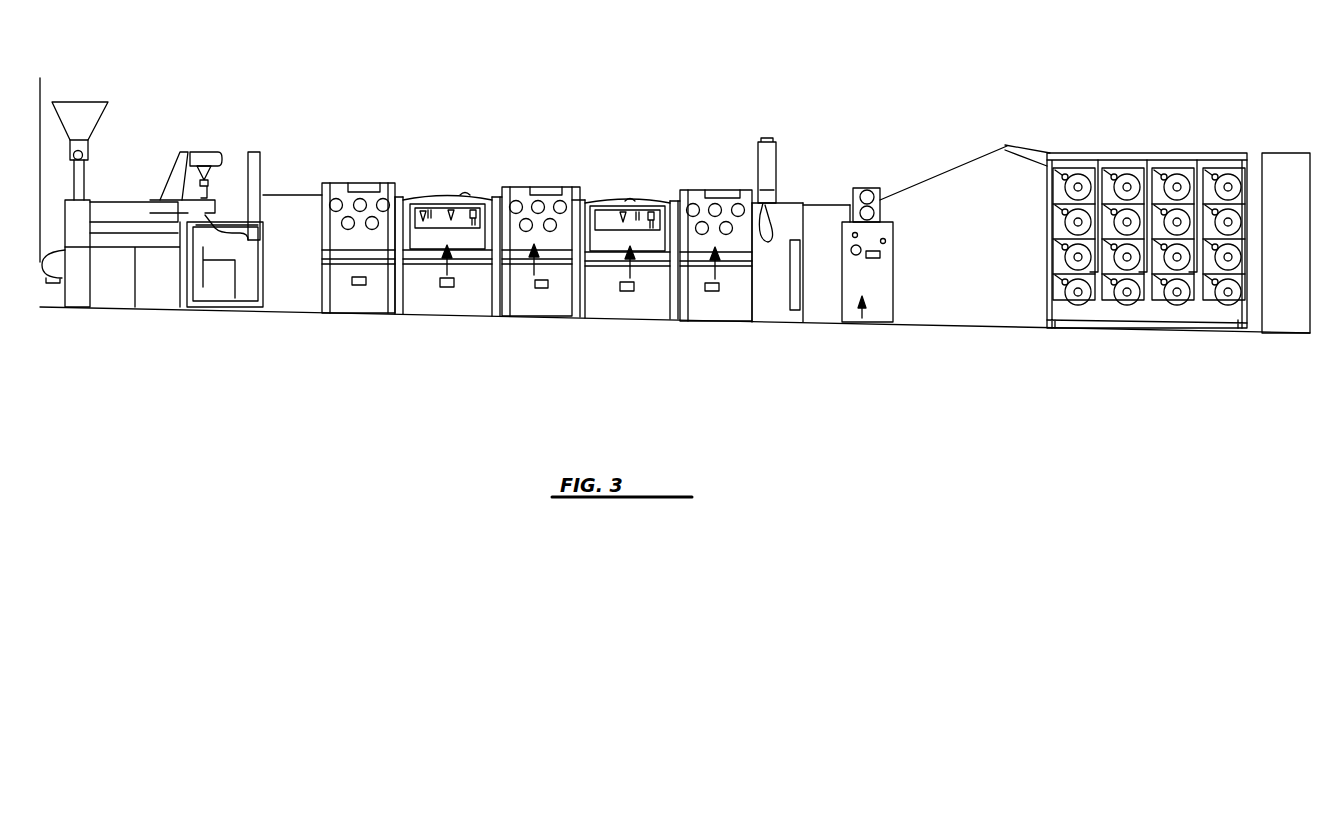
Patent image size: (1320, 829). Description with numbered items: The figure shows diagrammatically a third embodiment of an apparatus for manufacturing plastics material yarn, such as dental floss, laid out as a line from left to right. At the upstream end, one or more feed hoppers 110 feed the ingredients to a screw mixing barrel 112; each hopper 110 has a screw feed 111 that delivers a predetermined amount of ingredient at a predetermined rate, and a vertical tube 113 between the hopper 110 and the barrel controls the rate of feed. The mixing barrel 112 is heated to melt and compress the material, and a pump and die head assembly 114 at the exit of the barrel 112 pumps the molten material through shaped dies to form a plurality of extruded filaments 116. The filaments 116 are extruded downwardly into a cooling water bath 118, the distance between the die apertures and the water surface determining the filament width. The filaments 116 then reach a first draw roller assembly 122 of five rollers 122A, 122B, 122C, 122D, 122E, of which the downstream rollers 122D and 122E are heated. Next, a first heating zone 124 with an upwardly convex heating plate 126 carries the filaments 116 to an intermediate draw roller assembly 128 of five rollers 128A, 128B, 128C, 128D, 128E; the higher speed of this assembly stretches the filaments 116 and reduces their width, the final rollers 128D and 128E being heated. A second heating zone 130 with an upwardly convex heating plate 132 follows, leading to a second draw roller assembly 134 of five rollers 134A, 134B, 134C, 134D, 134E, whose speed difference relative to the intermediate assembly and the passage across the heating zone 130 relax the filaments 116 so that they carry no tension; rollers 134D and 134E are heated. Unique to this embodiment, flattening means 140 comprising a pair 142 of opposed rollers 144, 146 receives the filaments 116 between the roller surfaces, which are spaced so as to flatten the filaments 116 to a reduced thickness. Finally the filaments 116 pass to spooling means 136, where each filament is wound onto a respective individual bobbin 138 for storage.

The feed hopper 110 is at (86, 112).
The screw feed 111 is at (83, 153).
The screw mixing barrel 112 is at (117, 205).
The vertical tube 113 is at (85, 185).
The pump and die head assembly 114 is at (199, 148).
The extruded filaments 116 is at (297, 197).
The cooling water bath 118 is at (240, 242).
The first draw roller assembly 122 is at (375, 217).
The roller 122A is at (337, 198).
The roller 122B is at (348, 230).
The roller 122C is at (362, 199).
The roller 122D is at (372, 230).
The roller 122E is at (385, 199).
The first heating zone 124 is at (447, 277).
The heating plate 126 is at (468, 194).
The intermediate draw roller assembly 128 is at (550, 257).
The roller 128A is at (517, 200).
The roller 128B is at (526, 232).
The roller 128C is at (540, 200).
The roller 128D is at (550, 232).
The roller 128E is at (561, 200).
The second heating zone 130 is at (630, 280).
The heating plate 132 is at (632, 200).
The second draw roller assembly 134 is at (737, 258).
The roller 134A is at (695, 203).
The roller 134B is at (702, 235).
The roller 134C is at (716, 203).
The roller 134D is at (726, 235).
The roller 134E is at (740, 203).
The spooling means 136 is at (1151, 211).
The bobbin 138 is at (1066, 258).
The flattening means 140 is at (861, 315).
The pair of opposed rollers 142 is at (883, 182).
The roller 144 is at (865, 190).
The roller 146 is at (878, 213).